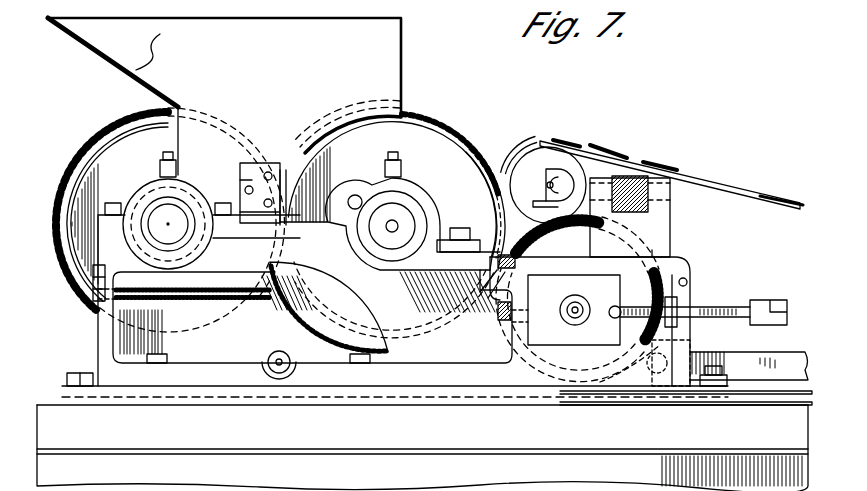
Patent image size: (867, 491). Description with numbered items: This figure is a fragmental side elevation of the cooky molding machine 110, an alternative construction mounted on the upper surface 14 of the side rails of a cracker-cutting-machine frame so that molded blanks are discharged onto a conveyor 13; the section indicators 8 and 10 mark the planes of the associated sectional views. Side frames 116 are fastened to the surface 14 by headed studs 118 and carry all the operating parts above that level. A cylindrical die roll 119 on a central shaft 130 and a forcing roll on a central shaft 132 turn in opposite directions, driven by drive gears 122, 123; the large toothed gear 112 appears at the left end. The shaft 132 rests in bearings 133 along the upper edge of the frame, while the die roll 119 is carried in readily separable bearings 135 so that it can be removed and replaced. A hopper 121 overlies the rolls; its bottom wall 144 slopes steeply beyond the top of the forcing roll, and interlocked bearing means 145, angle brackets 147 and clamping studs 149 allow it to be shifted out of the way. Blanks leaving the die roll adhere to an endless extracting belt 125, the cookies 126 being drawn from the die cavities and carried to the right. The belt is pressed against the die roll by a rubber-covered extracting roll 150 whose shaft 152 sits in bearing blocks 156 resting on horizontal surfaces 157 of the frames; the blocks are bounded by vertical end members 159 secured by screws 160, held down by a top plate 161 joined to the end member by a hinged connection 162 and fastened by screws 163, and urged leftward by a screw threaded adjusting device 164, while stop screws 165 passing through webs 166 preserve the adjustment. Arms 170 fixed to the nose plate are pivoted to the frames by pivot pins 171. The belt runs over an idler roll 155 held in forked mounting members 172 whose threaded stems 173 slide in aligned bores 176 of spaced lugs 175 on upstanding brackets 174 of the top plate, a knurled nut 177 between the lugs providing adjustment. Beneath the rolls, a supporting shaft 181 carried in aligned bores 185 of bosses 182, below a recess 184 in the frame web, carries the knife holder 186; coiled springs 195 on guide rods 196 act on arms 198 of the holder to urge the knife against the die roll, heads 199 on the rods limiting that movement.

The section line 8- 8 is at (302, 104).
The cooky molding machine 10 is at (707, 137).
The conveyor 13 is at (746, 401).
The upper surface 14 is at (786, 407).
The cooky molding machine 110 is at (410, 92).
The gear 112 is at (106, 135).
The side frames 116 is at (102, 334).
The headed studs 118 is at (81, 380).
The die roll 119 is at (428, 150).
The hopper 121 is at (224, 96).
The drive gear 122 is at (91, 284).
The drive gear 123 is at (332, 345).
The extracting belt 125 is at (770, 200).
The cookies 126 is at (618, 156).
The central shaft 130 is at (400, 222).
The central shaft 132 is at (172, 212).
The bearings 133 is at (146, 188).
The separable bearings 135 is at (413, 187).
The bottom wall 144 is at (171, 45).
The interlocked bearing means 145 is at (196, 250).
The angle brackets 147 is at (252, 160).
The clamping studs 149 is at (246, 215).
The rubber covered roll 150 is at (613, 211).
The central shaft 152 is at (572, 307).
The idler roll 155 is at (576, 166).
The bearing blocks 156 is at (536, 362).
The horizontal surfaces 157 is at (560, 334).
The vertical end members 159 is at (688, 337).
The screws 160 is at (703, 362).
The top plate 161 is at (589, 262).
The hinged connection 162 is at (688, 281).
The screws 163 is at (528, 263).
The screw threaded adjusting device 164 is at (701, 309).
The stop screws 165 is at (505, 320).
The webs 166 is at (523, 327).
The arms 170 is at (777, 372).
The pivot pins 171 is at (646, 400).
The forked mounting members 172 is at (546, 152).
The threaded stem 173 is at (540, 183).
The upstanding brackets 174 is at (672, 238).
The spaced lugs 175 is at (672, 192).
The aligned bores 176 is at (672, 214).
The knurled nut 177 is at (668, 240).
The supporting shaft 181 is at (279, 376).
The bosses 182 is at (296, 368).
The recess 184 is at (356, 310).
The aligned bores 185 is at (290, 371).
The knife holder 186 is at (263, 333).
The expansive coiled springs 195 is at (200, 306).
The guide rods 196 is at (92, 298).
The arm 198 is at (290, 295).
The heads 199 is at (336, 318).